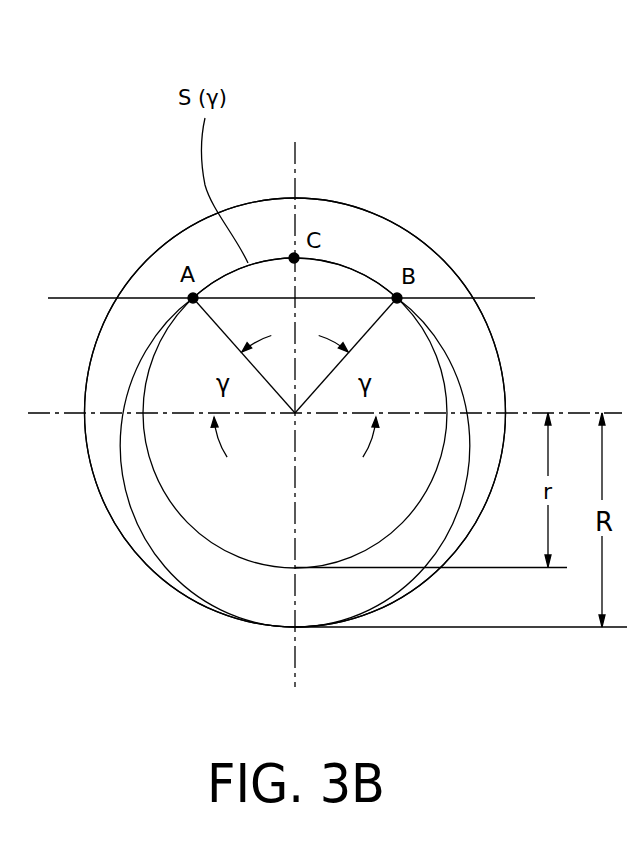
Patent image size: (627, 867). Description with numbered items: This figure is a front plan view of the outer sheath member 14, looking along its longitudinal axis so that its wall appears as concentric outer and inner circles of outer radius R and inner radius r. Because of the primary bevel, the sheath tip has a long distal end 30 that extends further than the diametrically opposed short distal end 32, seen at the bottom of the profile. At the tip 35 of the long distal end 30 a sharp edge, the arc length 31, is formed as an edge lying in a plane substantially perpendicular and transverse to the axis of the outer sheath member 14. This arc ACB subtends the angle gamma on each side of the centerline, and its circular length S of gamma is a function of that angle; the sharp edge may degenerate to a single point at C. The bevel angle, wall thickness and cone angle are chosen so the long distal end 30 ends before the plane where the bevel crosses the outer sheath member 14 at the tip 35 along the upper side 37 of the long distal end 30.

The outer sheath member 14 is at (503, 355).
The long distal end 30 is at (323, 197).
The arc length 31 is at (367, 277).
The short distal end 32 is at (268, 637).
The tip of the long distal end 35 is at (222, 277).
The upper side of the long distal end 37 is at (293, 258).